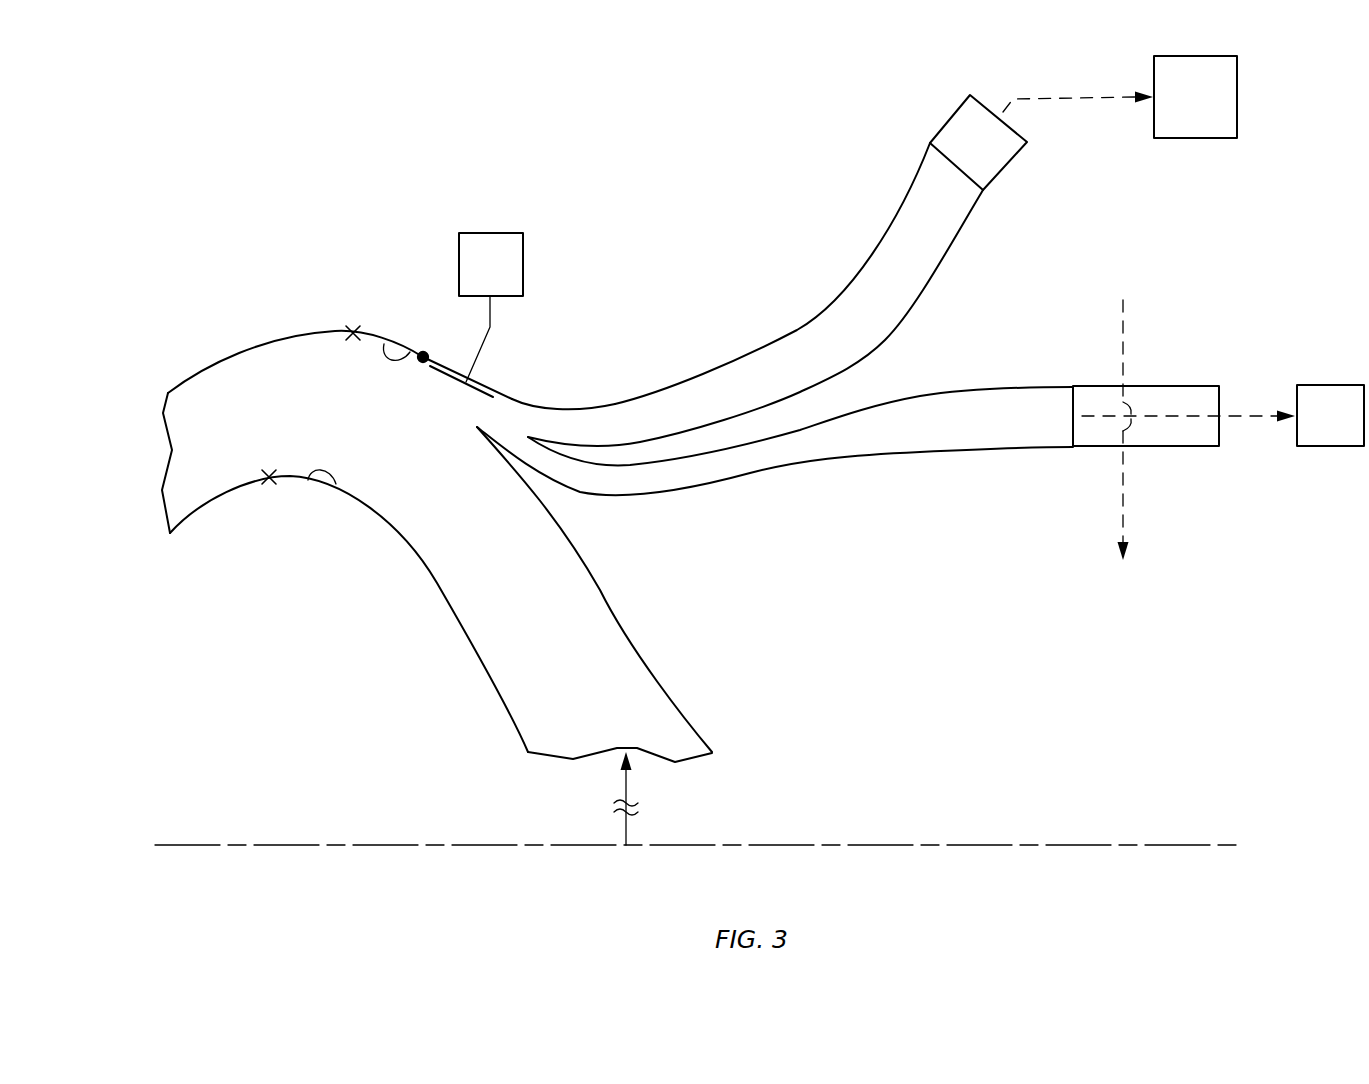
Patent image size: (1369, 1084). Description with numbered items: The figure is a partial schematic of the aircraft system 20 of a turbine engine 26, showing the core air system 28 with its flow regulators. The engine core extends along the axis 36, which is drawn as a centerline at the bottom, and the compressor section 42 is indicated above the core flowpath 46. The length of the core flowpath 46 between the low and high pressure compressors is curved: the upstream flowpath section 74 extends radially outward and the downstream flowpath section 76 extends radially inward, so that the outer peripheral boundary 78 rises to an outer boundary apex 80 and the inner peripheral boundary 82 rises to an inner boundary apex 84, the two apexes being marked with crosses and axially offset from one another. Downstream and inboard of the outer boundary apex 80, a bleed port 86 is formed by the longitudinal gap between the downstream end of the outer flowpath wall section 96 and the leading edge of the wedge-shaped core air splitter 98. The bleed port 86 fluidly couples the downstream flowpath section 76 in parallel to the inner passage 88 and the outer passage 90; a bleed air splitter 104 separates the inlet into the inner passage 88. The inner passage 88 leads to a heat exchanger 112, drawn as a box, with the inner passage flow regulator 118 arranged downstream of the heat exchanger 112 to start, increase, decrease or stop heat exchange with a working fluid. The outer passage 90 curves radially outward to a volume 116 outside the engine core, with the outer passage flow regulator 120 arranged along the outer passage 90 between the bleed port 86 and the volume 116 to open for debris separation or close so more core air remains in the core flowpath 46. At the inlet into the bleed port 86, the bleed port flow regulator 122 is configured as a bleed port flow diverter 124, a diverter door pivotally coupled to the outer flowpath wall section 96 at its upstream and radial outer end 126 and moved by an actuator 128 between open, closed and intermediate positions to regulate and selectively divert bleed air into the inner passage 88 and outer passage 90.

The aircraft system 20 is at (284, 430).
The turbine engine 26 is at (345, 572).
The core air system 28 is at (620, 302).
The axis 36 is at (192, 848).
The compressor section 42 is at (453, 212).
The core flowpath 46 is at (594, 594).
The upstream flowpath section 74 is at (210, 500).
The downstream flowpath section 76 is at (437, 583).
The outer peripheral boundary 78 is at (413, 350).
The outer boundary apex 80 is at (353, 332).
The inner peripheral boundary 82 is at (336, 484).
The inner boundary apex 84 is at (268, 477).
The bleed port 86 is at (512, 420).
The inner passage 88 is at (905, 432).
The outer passage 90 is at (880, 303).
The outer flowpath wall section 96 is at (370, 338).
The core air splitter 98 is at (490, 447).
The bleed air splitter 104 is at (540, 452).
The heat exchanger 112 is at (1173, 386).
The volume 116 is at (1120, 97).
The inner passage flow regulator 118 is at (1330, 415).
The outer passage flow regulator 120 is at (978, 142).
The bleed port flow regulator 122 is at (433, 378).
The bleed port flow diverter 124 is at (480, 390).
The upstream and radial outer end 126 is at (423, 354).
The actuator 128 is at (491, 307).